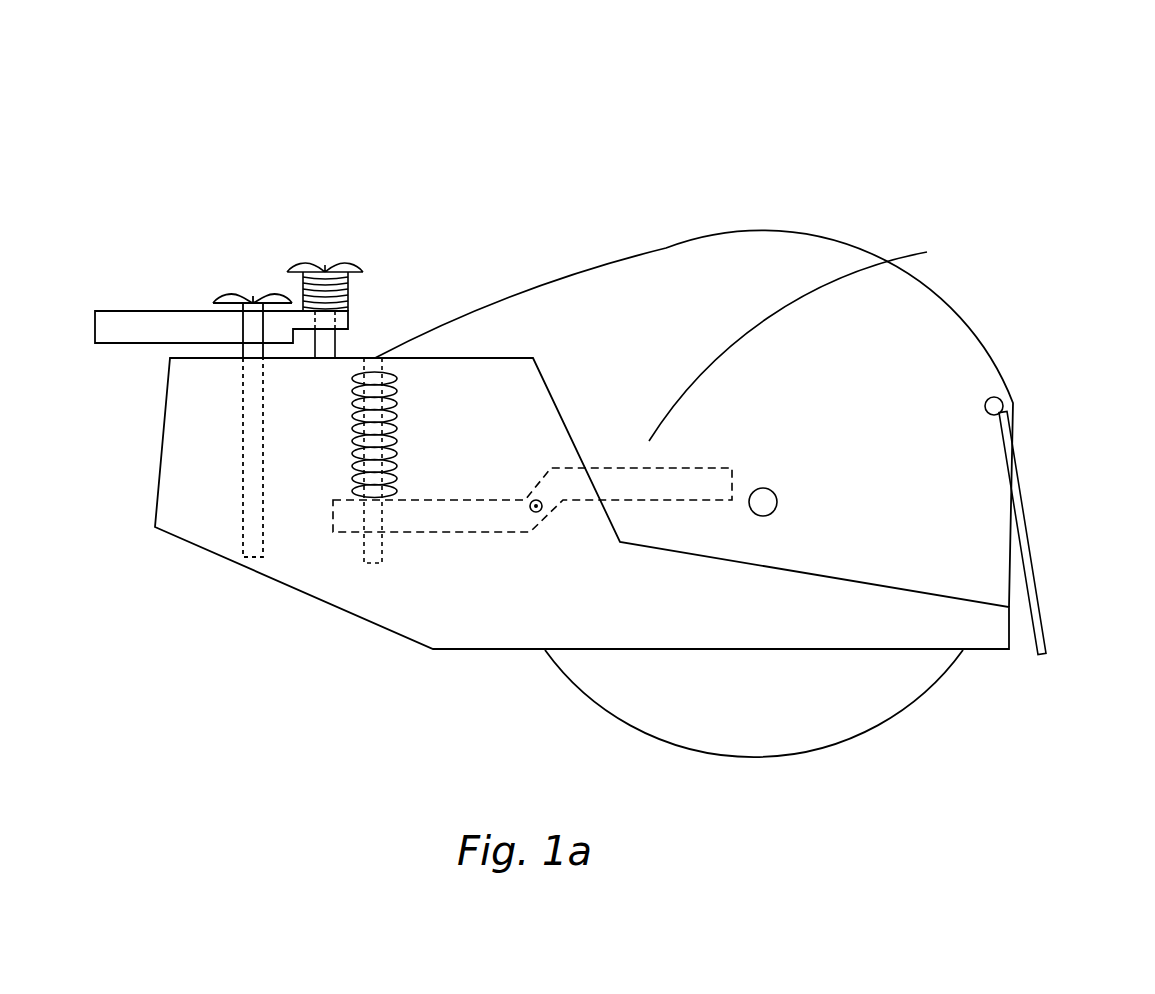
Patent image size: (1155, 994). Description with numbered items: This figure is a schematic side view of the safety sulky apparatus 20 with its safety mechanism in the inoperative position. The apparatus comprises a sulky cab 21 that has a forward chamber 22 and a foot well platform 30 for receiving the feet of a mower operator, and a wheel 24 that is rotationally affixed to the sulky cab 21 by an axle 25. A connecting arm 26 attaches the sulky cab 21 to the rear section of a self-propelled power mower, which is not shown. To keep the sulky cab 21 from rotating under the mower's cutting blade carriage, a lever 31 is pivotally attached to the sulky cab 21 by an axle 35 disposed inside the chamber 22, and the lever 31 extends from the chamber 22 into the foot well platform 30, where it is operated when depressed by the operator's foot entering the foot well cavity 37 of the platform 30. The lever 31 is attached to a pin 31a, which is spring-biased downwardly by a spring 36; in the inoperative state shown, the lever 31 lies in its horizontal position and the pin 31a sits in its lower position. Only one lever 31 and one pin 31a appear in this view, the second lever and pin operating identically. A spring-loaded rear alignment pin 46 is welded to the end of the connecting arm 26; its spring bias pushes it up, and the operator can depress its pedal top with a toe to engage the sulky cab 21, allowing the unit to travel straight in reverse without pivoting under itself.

The safety sulky apparatus 20 is at (990, 170).
The sulky cab 21 is at (632, 228).
The forward chamber 22 is at (182, 483).
The wheel 24 is at (853, 697).
The axle 25 is at (763, 488).
The connecting arm 26 is at (122, 327).
The foot well platform 30 is at (967, 593).
The lever 31 is at (678, 480).
The pin 31a is at (367, 548).
The axle 35 is at (530, 494).
The spring 36 is at (352, 465).
The foot well cavity 37 is at (812, 342).
The rear alignment pin 46 is at (321, 263).